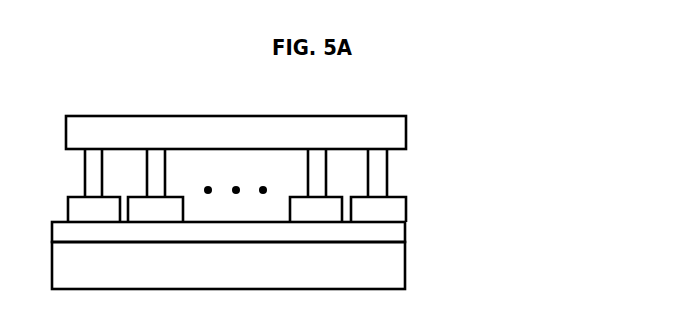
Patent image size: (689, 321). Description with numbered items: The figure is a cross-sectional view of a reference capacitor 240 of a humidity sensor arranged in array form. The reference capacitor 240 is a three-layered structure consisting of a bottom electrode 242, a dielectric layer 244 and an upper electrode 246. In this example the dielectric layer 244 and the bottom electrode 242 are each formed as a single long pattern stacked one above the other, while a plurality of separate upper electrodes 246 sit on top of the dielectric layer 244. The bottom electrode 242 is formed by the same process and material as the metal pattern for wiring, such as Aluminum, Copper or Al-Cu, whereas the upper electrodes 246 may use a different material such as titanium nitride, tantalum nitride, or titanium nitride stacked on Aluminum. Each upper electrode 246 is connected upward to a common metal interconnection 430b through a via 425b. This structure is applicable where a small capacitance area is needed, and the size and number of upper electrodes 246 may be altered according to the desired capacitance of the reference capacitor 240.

The metal interconnection 430b is at (392, 134).
The via 425b is at (383, 170).
The upper electrode 246 is at (388, 209).
The dielectric layer 244 is at (388, 233).
The bottom electrode 242 is at (388, 266).
The reference capacitor 240 is at (317, 242).